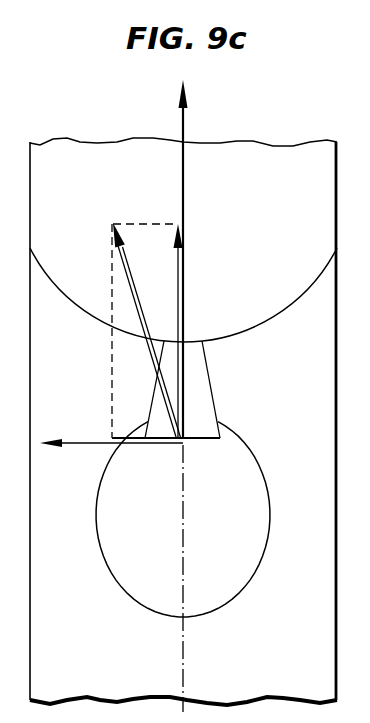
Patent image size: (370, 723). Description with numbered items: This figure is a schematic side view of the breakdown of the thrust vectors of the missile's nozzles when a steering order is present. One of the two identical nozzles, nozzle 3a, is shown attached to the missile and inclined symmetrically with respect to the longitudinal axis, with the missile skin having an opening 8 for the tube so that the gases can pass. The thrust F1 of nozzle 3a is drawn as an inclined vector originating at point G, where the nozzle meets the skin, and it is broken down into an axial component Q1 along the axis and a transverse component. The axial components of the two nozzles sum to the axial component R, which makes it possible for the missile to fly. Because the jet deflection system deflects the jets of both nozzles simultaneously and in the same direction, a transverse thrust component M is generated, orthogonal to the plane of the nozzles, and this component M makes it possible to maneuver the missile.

The nozzle 3a is at (202, 404).
The opening 8 is at (255, 527).
The axial component R is at (192, 259).
The pivot point G is at (166, 454).
The thrust F1 is at (133, 316).
The axial component of thrust Q1 is at (207, 316).
The transverse thrust component M is at (111, 458).